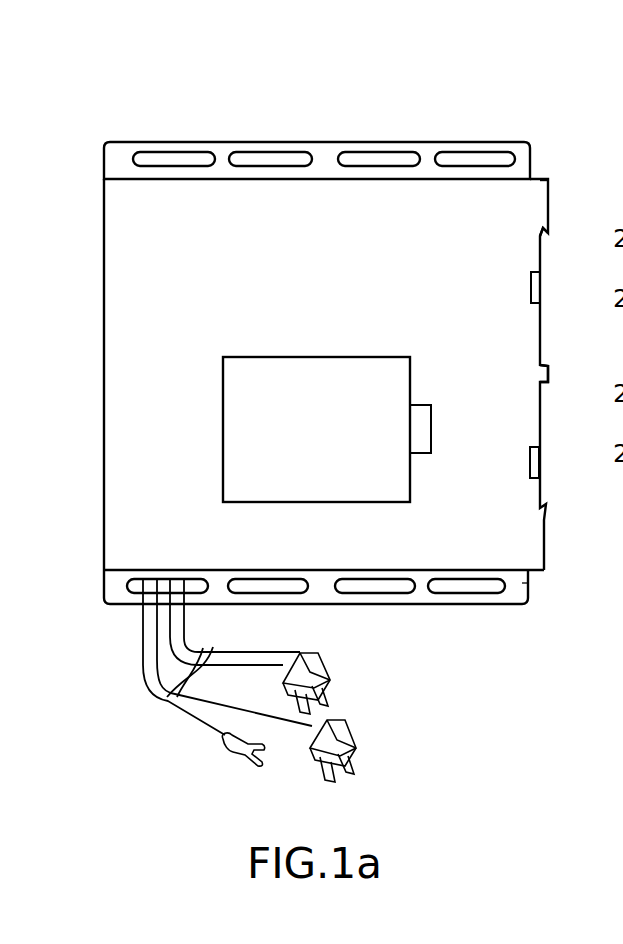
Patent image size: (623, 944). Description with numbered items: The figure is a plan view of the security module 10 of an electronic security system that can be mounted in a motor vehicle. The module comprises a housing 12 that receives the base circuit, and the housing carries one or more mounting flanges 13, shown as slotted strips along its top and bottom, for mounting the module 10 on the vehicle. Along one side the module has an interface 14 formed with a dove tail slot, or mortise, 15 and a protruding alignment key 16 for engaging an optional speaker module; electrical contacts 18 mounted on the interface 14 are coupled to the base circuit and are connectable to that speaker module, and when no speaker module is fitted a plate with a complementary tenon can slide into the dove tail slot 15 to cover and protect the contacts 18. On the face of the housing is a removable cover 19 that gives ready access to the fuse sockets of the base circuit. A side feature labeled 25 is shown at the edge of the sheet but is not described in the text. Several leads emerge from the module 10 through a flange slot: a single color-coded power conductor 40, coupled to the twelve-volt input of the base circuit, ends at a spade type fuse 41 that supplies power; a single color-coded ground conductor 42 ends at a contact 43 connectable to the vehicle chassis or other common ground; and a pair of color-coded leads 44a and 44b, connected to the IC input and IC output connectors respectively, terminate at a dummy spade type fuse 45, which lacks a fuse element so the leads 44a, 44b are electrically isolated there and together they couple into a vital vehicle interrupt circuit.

The security module 10 is at (323, 121).
The housing 12 is at (428, 548).
The mounting flange 13 is at (224, 145).
The interface 14 is at (563, 178).
The dove tail slot 15 is at (541, 245).
The alignment key 16 is at (548, 372).
The electrical contacts 18 is at (541, 292).
The removable cover 19 is at (353, 362).
The side element 25 is at (613, 548).
The power conductor 40 is at (297, 716).
The spade type fuse 41 is at (318, 771).
The ground conductor 42 is at (200, 715).
The contact 43 is at (222, 752).
The electrical lead 44a is at (247, 650).
The electrical lead 44b is at (273, 660).
The dummy spade type fuse 45 is at (322, 705).